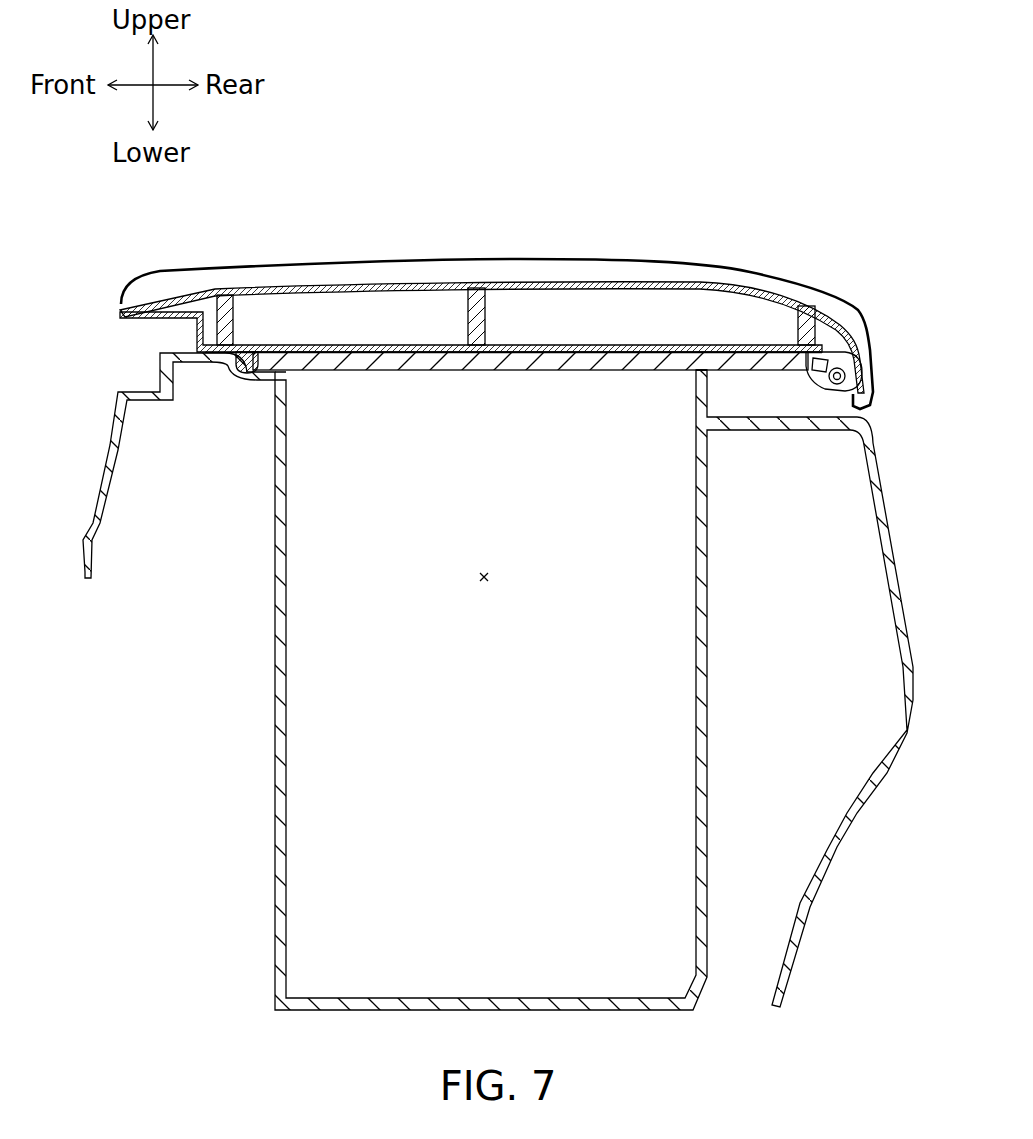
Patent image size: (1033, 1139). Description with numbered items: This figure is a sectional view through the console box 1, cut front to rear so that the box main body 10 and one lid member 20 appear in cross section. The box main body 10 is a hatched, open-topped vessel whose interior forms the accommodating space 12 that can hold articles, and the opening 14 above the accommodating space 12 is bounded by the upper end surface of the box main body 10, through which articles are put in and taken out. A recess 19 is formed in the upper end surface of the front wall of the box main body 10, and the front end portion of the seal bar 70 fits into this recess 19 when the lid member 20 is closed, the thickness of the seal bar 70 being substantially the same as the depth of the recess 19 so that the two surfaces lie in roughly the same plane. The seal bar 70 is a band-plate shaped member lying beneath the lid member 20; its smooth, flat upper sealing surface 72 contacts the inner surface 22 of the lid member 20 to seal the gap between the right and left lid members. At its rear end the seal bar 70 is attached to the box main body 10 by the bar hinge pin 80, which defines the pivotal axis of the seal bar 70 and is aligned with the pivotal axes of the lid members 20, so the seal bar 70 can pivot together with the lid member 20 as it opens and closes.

The console box 1 is at (753, 216).
The box main body 10 is at (250, 714).
The accommodating space 12 is at (484, 583).
The opening 14 is at (293, 368).
The recess 19 is at (252, 356).
The lid member 20 is at (470, 252).
The inner surface 22 is at (423, 353).
The seal bar 70 is at (569, 373).
The flat upper sealing surface 72 is at (381, 343).
The bar hinge pin 80 is at (852, 373).